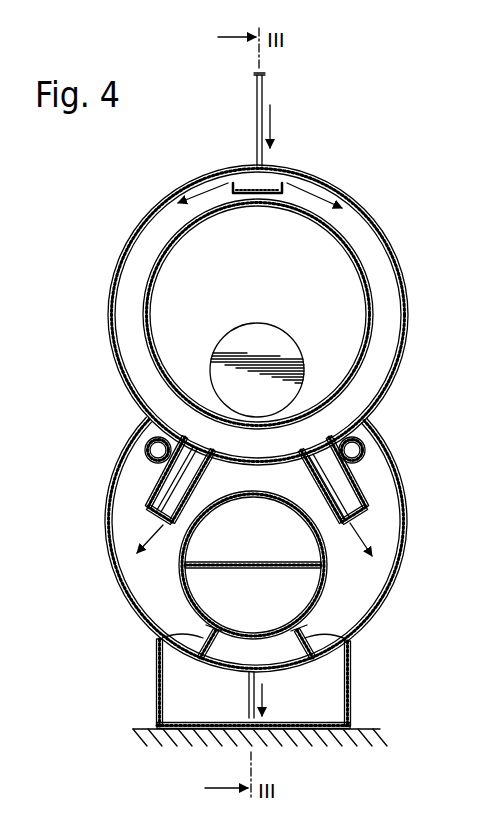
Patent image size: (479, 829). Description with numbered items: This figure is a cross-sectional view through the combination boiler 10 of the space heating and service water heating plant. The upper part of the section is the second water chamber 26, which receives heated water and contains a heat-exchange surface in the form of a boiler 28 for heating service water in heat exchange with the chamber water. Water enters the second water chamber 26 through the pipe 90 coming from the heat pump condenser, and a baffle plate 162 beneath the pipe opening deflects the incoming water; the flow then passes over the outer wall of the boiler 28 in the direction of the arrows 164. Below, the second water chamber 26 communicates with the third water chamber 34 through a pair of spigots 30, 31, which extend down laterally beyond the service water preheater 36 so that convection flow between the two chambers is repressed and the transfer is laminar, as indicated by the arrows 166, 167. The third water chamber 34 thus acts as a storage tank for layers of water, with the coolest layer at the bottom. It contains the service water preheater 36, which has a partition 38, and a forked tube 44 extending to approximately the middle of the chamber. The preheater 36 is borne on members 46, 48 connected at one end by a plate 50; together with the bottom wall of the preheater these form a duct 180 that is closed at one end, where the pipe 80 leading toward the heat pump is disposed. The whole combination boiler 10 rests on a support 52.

The combination boiler 10 is at (378, 180).
The second water chamber 26 is at (162, 222).
The boiler 28 is at (372, 280).
The spigot 30 is at (338, 484).
The spigot 31 is at (182, 482).
The third water chamber 34 is at (133, 572).
The service water preheater 36 is at (197, 592).
The partition 38 is at (262, 562).
The forked tube 44 is at (145, 448).
The member 46 is at (346, 640).
The member 48 is at (198, 638).
The plate 50 is at (240, 650).
The support 52 is at (334, 707).
The pipe 80 is at (250, 697).
The pipe 90 is at (257, 93).
The baffle plate 162 is at (262, 196).
The arrows 164 is at (205, 186).
The arrow 166 is at (353, 533).
The arrow 167 is at (146, 528).
The duct 180 is at (280, 653).